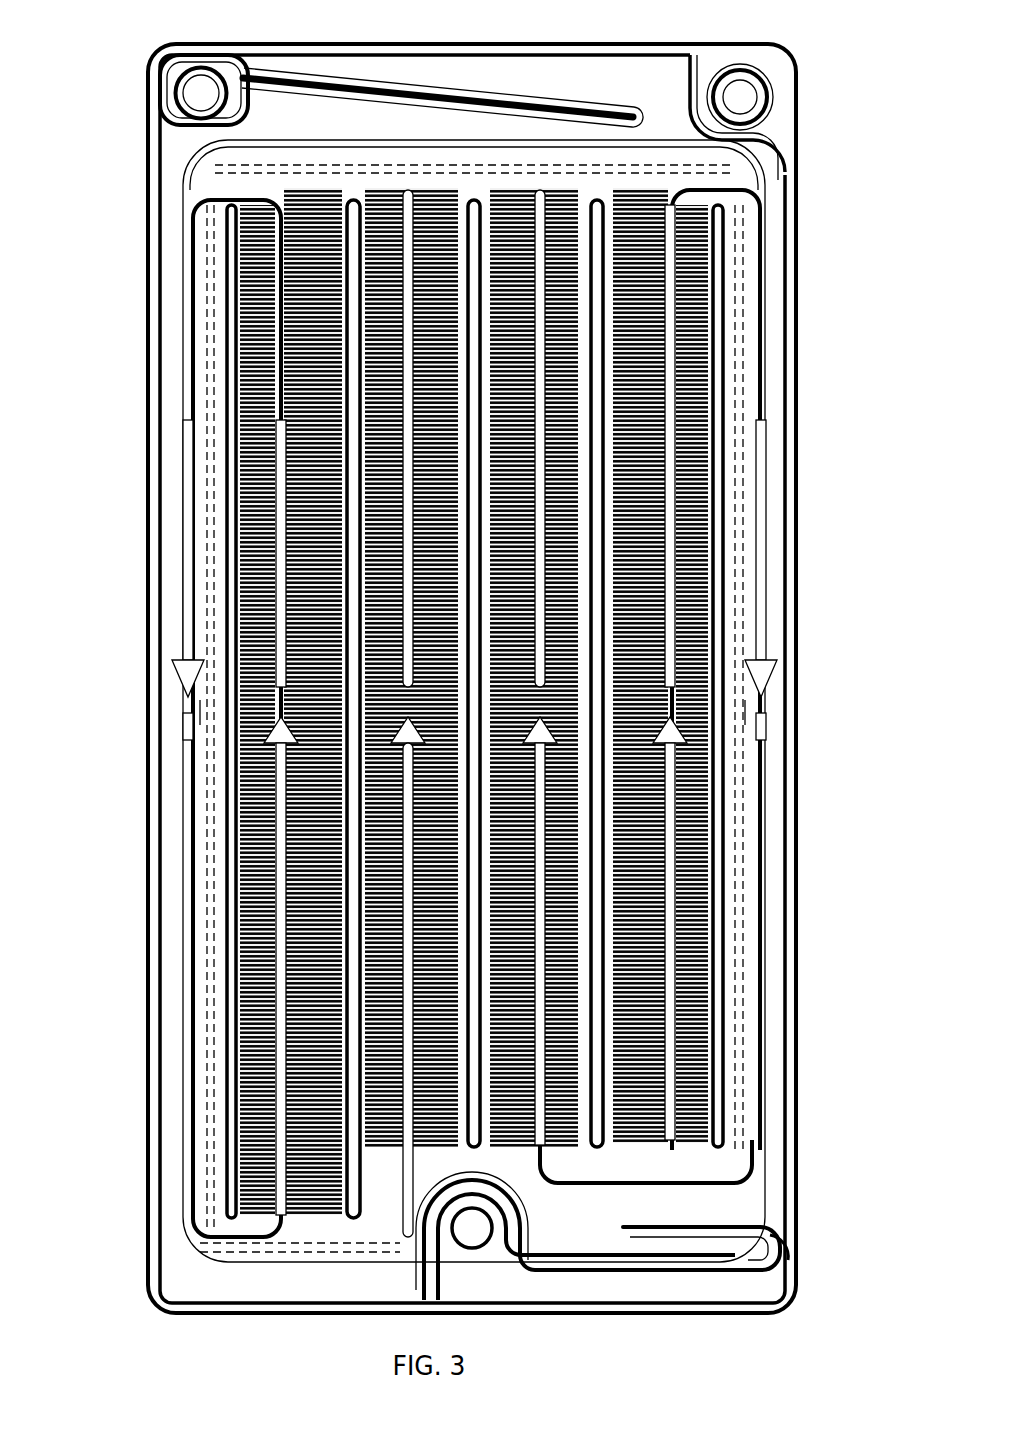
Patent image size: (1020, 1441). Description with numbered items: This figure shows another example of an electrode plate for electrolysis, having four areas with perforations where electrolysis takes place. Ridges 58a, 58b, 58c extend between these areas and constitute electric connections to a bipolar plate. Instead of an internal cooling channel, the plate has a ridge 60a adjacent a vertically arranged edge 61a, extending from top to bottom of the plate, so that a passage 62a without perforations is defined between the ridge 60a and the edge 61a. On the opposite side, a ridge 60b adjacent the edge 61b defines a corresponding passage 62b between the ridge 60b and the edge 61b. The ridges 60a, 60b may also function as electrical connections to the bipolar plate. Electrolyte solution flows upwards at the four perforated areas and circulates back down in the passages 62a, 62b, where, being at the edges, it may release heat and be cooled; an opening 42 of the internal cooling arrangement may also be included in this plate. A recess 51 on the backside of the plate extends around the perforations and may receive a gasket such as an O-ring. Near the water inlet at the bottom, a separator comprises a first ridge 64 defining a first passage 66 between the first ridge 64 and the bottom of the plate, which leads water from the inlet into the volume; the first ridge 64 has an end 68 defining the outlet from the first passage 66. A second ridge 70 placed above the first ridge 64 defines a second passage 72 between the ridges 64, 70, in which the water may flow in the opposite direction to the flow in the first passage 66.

The opening 42 is at (470, 1232).
The recess 51 is at (200, 712).
The ridge 58a is at (353, 200).
The ridge 58b is at (474, 200).
The ridge 58c is at (598, 200).
The ridge 60a is at (718, 200).
The ridge 60b is at (232, 203).
The edge 61a is at (800, 638).
The edge 61b is at (148, 638).
The passage 62a is at (763, 690).
The passage 62b is at (190, 690).
The first ridge 64 is at (583, 1262).
The first passage 66 is at (505, 1268).
The end 68 is at (728, 1265).
The second ridge 70 is at (665, 1233).
The second passage 72 is at (634, 1252).